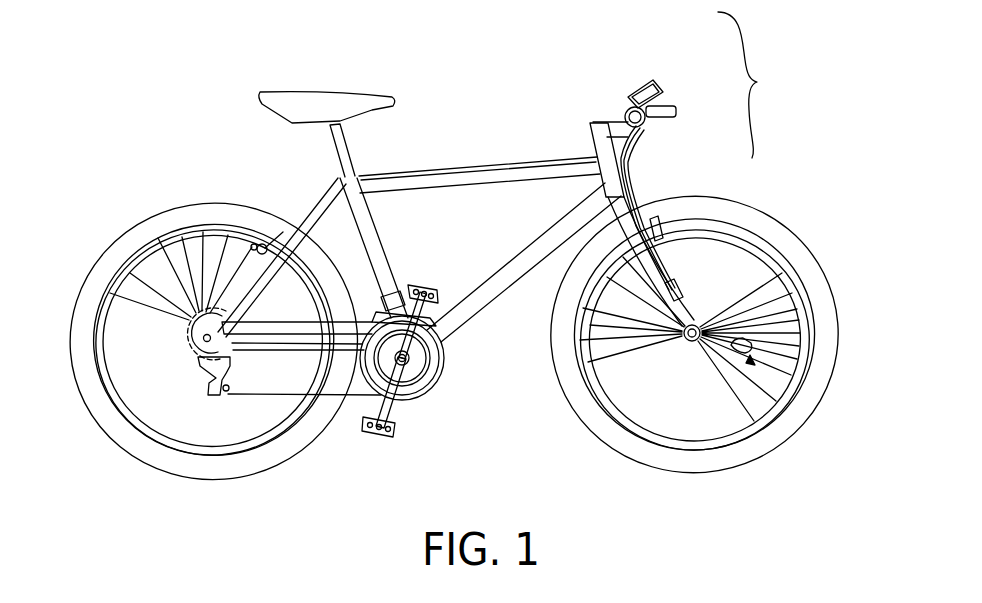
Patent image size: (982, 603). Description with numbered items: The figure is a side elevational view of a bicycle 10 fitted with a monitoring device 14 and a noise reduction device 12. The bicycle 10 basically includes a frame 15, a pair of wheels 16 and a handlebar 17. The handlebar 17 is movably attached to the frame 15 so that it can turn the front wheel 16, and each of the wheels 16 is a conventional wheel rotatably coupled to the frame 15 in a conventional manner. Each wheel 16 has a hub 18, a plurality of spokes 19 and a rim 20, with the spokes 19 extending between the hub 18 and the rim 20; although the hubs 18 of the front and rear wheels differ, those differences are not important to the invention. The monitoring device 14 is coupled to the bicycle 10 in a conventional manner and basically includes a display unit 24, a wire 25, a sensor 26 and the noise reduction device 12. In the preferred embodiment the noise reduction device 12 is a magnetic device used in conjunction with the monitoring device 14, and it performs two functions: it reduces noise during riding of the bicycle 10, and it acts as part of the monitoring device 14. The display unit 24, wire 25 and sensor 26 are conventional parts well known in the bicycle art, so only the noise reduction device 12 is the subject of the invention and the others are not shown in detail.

The bicycle 10 is at (448, 95).
The noise reduction device 12 is at (752, 361).
The monitoring device 14 is at (754, 85).
The frame 15 is at (455, 176).
The wheels 16 is at (111, 253).
The handlebar 17 is at (590, 124).
The hub 18 is at (690, 314).
The spokes 19 is at (727, 392).
The rim 20 is at (577, 380).
The display unit 24 is at (645, 72).
The wire 25 is at (622, 170).
The sensor 26 is at (677, 283).